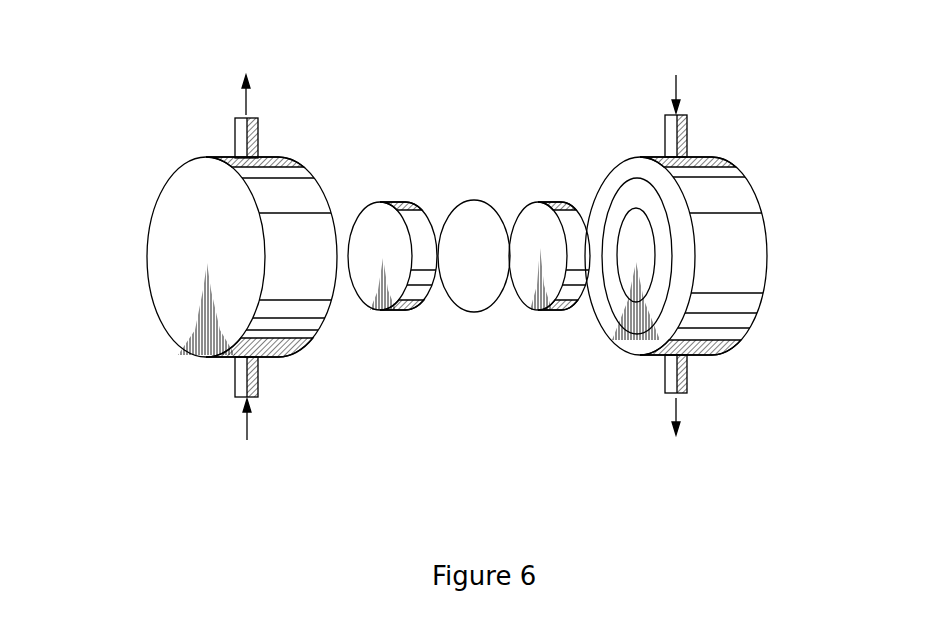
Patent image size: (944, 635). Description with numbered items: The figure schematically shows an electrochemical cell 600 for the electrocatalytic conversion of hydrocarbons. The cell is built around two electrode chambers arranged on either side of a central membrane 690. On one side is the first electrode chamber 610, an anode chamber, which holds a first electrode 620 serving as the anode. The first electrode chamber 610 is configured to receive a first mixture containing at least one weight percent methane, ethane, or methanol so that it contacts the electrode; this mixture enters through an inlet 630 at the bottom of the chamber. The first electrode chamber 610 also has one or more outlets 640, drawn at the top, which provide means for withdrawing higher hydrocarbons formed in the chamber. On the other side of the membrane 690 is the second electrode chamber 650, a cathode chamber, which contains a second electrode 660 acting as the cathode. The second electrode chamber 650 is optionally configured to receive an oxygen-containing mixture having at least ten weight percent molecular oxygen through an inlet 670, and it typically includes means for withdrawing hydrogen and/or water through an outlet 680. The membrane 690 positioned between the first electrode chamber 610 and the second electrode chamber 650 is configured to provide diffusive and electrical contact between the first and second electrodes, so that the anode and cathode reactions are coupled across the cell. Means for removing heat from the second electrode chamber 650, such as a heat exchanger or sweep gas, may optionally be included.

The electrochemical cell 600 is at (132, 26).
The first electrode chamber 610 is at (174, 318).
The first electrode 620 is at (366, 297).
The inlet 630 is at (258, 388).
The outlet 640 is at (258, 138).
The second electrode chamber 650 is at (745, 320).
The second electrode 660 is at (573, 307).
The inlet 670 is at (687, 128).
The outlet 680 is at (687, 378).
The membrane 690 is at (455, 292).